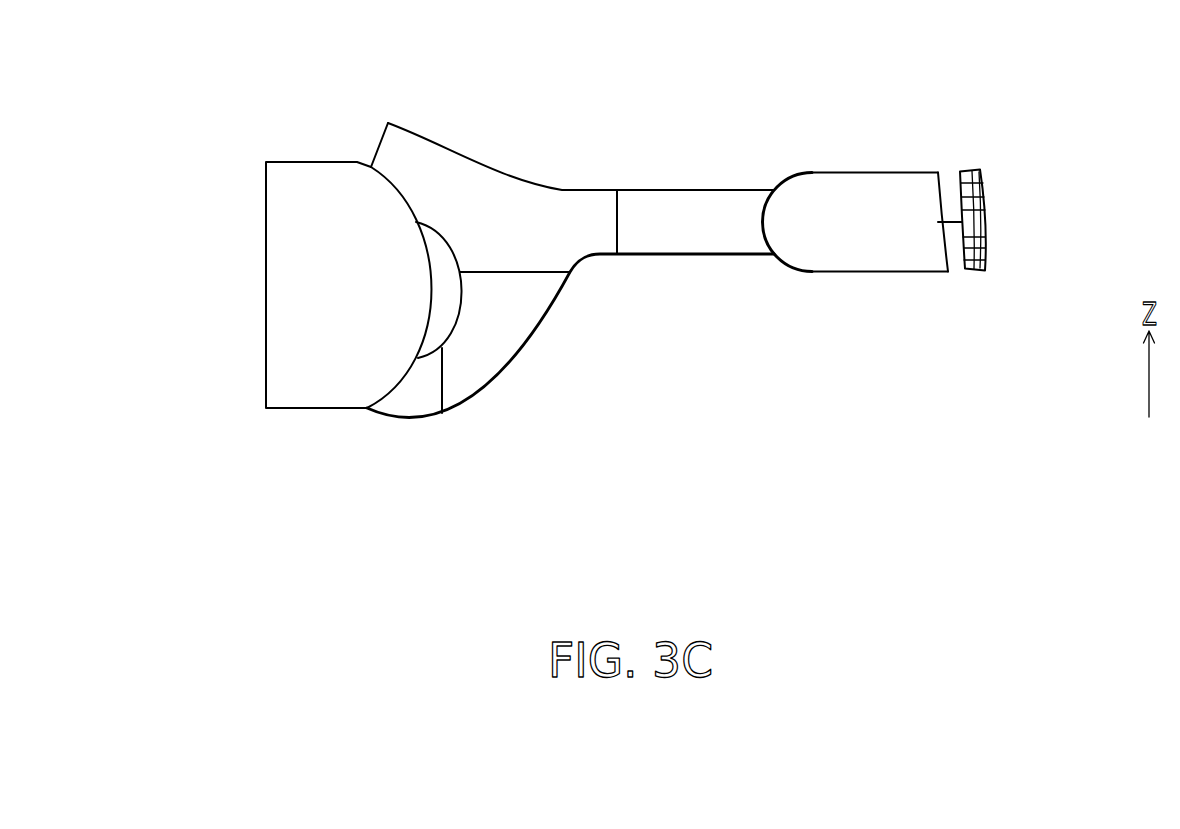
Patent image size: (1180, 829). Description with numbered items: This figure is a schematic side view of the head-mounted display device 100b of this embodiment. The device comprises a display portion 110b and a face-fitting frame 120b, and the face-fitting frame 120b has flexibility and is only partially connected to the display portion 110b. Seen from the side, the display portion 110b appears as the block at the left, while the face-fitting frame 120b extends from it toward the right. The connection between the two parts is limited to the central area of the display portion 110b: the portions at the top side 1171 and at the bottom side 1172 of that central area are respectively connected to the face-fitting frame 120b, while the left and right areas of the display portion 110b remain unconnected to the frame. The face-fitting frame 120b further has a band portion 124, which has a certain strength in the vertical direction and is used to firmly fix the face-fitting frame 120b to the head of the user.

The head-mounted display device 100b is at (1023, 490).
The display portion 110b is at (297, 271).
The face-fitting frame 120b is at (507, 335).
The band portion 124 is at (692, 238).
The top side 1171 is at (368, 161).
The bottom side 1172 is at (365, 412).